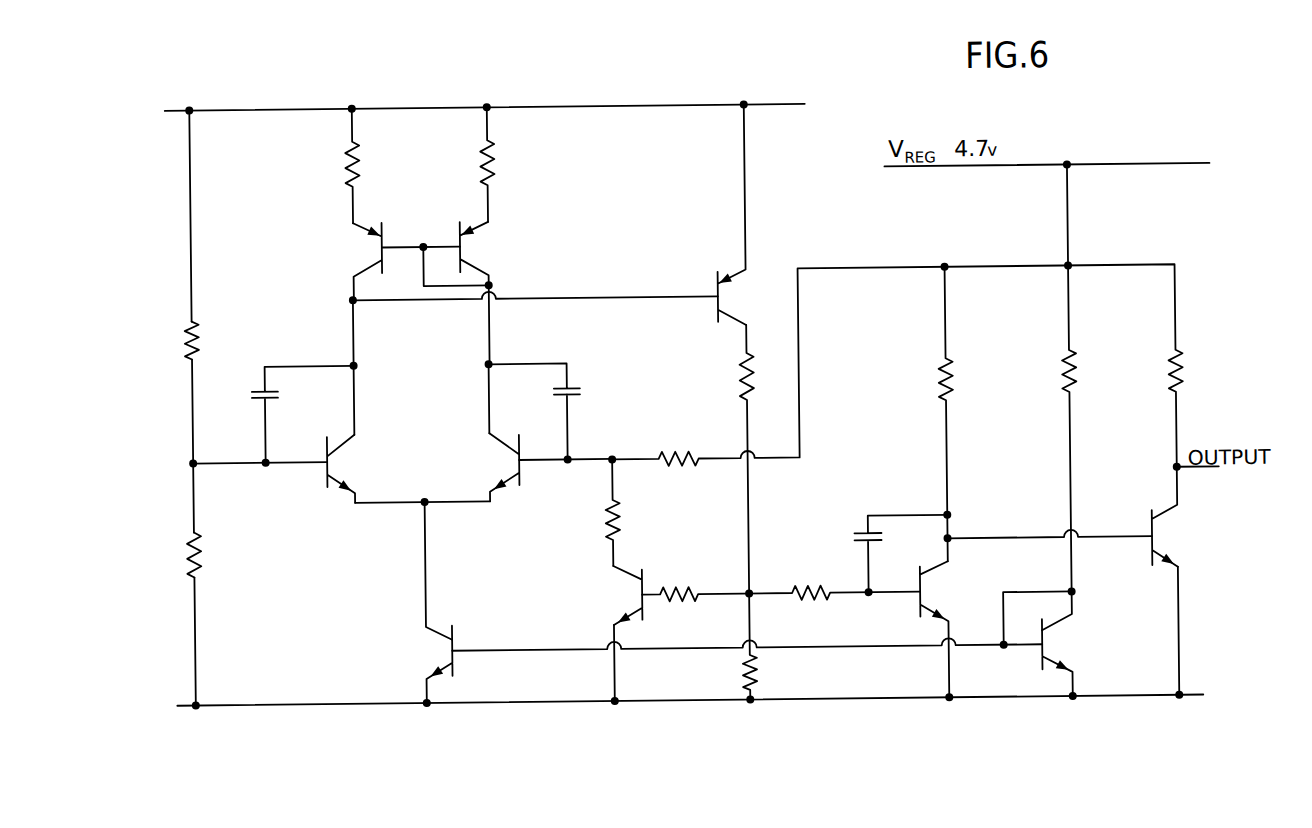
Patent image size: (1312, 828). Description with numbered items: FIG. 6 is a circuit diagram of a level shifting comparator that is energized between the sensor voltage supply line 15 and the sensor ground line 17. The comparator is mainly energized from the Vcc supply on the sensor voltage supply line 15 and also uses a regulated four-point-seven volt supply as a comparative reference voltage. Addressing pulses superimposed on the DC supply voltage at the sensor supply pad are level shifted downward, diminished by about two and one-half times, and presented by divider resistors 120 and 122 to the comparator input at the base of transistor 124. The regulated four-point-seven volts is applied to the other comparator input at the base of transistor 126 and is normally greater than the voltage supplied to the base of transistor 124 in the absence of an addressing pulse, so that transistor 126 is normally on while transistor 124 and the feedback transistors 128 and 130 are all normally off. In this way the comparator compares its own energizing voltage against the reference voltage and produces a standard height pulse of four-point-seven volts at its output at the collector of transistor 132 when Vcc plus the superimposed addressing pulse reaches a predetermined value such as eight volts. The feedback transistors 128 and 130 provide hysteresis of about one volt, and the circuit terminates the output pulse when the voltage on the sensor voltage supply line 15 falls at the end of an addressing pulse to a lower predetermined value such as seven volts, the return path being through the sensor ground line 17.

The sensor voltage supply line 15 is at (634, 105).
The sensor ground line 17 is at (236, 699).
The divider resistor 120 is at (200, 334).
The divider resistor 122 is at (200, 555).
The transistor 124 is at (333, 452).
The transistor 126 is at (515, 456).
The feedback transistor 128 is at (716, 285).
The feedback transistor 130 is at (638, 590).
The transistor 132 is at (1149, 554).